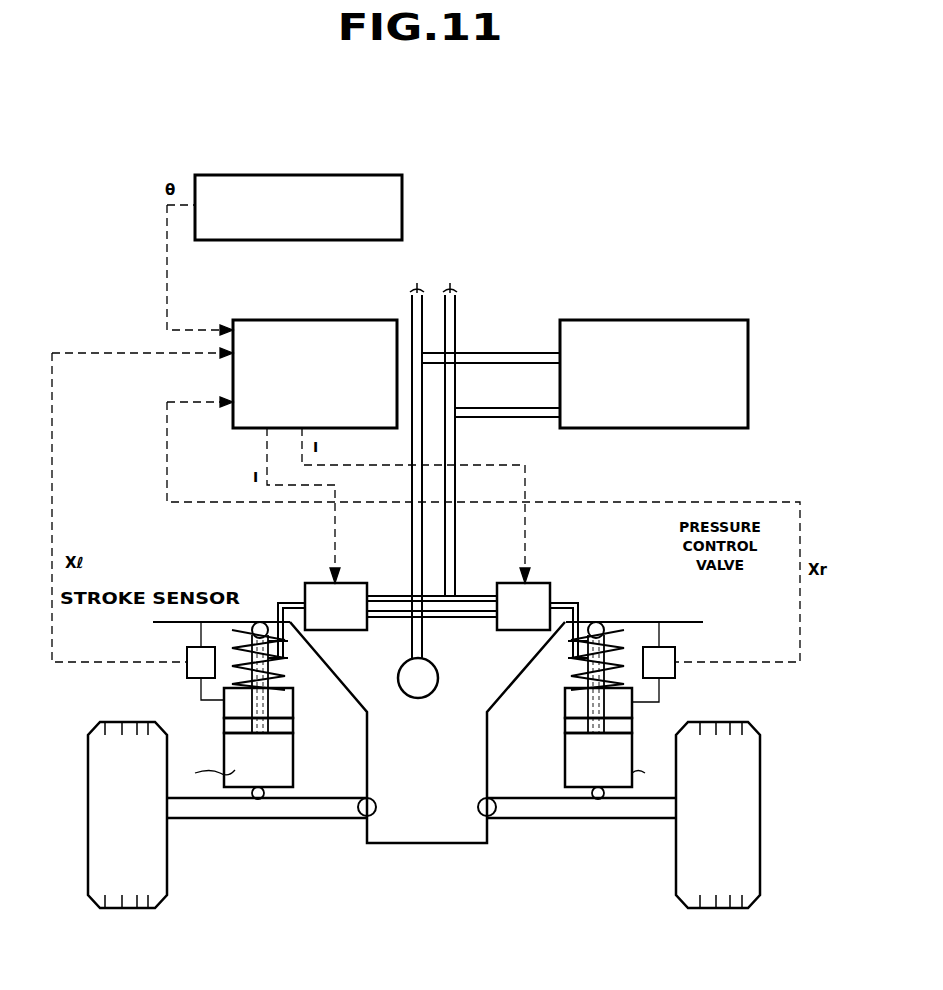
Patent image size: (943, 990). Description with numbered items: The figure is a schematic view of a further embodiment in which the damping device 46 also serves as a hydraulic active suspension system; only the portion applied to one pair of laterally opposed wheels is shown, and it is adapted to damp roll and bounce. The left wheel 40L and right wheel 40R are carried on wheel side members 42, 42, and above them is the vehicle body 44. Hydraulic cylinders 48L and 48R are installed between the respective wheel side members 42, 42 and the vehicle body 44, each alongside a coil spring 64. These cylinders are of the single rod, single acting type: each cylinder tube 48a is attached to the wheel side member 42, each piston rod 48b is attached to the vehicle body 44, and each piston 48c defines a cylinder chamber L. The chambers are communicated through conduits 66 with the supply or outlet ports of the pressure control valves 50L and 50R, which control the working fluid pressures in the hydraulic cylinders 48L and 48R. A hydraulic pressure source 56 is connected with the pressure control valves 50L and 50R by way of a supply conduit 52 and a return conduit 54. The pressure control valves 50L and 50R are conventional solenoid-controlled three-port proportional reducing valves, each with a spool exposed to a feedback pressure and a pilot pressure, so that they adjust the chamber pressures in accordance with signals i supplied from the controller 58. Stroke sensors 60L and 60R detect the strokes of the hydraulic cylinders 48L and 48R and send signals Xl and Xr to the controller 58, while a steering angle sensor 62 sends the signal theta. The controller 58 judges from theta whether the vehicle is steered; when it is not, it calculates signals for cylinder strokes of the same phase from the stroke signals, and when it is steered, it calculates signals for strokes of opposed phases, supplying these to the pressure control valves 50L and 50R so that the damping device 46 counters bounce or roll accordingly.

The damping device 46 is at (566, 228).
The steering angle sensor 62 is at (300, 175).
The controller 58 is at (315, 320).
The hydraulic pressure source 56 is at (748, 372).
The supply conduit 52 is at (510, 353).
The return conduit 54 is at (512, 408).
The pressure control valve 50L is at (312, 583).
The pressure control valve 50R is at (545, 583).
The conduit 66 is at (278, 603).
The coil spring 64 is at (272, 672).
The stroke sensor 60L is at (187, 652).
The stroke sensor 60R is at (675, 652).
The hydraulic cylinder 48L is at (213, 745).
The hydraulic cylinder 48R is at (644, 745).
The cylinder tube 48a is at (293, 775).
The piston rod 48b is at (293, 702).
The piston 48c is at (293, 728).
The vehicle body 44 is at (440, 845).
The wheel side member 42 is at (296, 820).
The left wheel 40L is at (112, 908).
The right wheel 40R is at (735, 908).